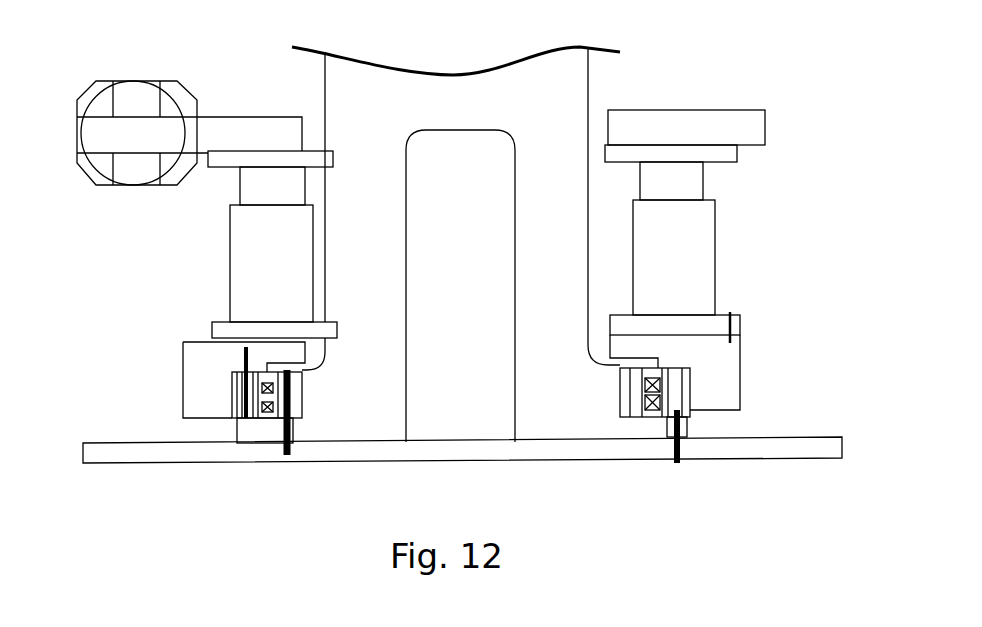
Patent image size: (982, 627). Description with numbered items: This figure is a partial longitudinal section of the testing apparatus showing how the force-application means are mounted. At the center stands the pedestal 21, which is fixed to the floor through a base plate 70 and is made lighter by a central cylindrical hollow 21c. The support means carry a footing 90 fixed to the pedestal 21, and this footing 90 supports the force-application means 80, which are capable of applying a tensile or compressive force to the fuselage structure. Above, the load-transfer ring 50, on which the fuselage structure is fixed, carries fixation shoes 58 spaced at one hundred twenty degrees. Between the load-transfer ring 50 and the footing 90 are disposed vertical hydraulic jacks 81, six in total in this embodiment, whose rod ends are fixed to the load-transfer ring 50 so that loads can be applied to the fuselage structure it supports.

The pedestal 21 is at (368, 80).
The central cylindrical hollow 21c is at (460, 406).
The load-transfer ring 50 is at (742, 118).
The fixation shoe 58 is at (130, 95).
The base plate 70 is at (562, 450).
The force-application means 80 is at (767, 272).
The hydraulic jack 81 is at (693, 220).
The footing 90 is at (718, 368).